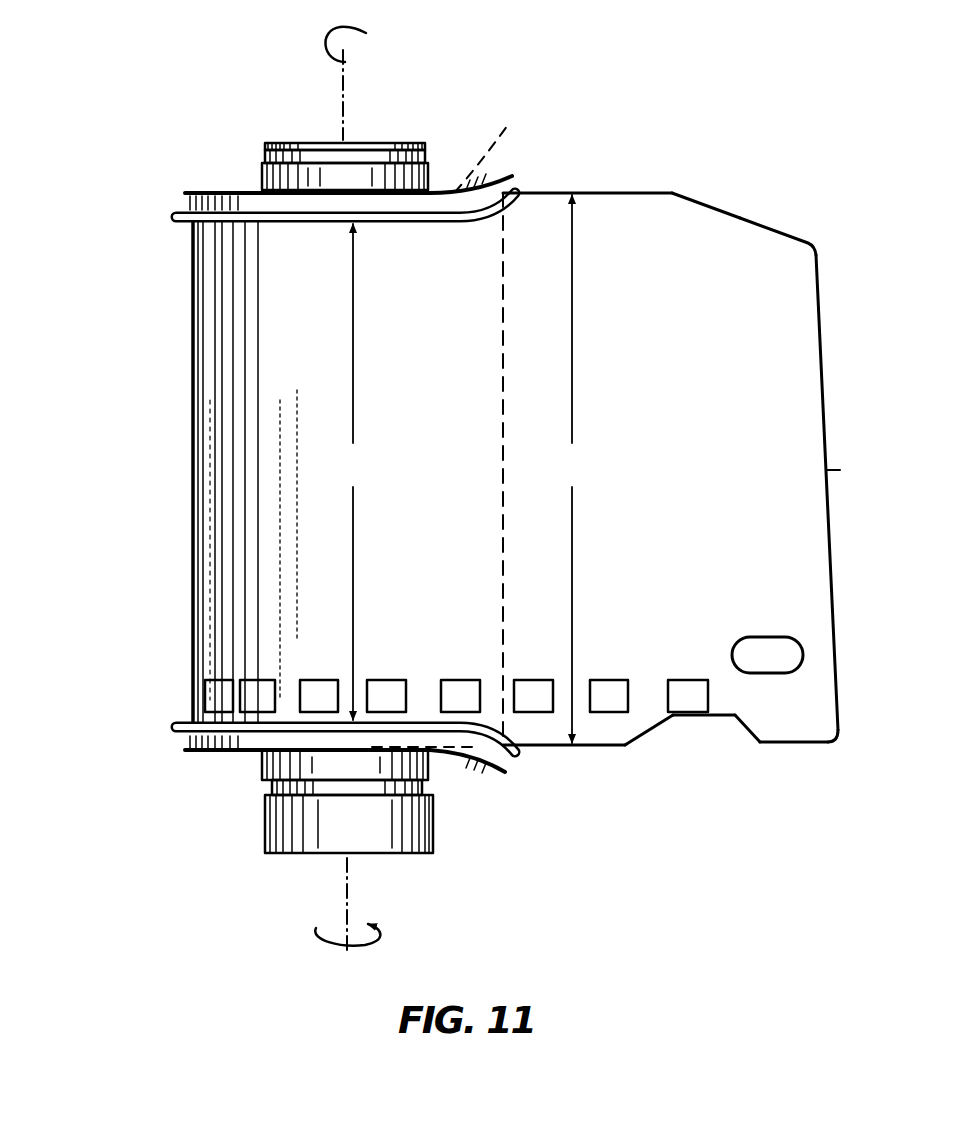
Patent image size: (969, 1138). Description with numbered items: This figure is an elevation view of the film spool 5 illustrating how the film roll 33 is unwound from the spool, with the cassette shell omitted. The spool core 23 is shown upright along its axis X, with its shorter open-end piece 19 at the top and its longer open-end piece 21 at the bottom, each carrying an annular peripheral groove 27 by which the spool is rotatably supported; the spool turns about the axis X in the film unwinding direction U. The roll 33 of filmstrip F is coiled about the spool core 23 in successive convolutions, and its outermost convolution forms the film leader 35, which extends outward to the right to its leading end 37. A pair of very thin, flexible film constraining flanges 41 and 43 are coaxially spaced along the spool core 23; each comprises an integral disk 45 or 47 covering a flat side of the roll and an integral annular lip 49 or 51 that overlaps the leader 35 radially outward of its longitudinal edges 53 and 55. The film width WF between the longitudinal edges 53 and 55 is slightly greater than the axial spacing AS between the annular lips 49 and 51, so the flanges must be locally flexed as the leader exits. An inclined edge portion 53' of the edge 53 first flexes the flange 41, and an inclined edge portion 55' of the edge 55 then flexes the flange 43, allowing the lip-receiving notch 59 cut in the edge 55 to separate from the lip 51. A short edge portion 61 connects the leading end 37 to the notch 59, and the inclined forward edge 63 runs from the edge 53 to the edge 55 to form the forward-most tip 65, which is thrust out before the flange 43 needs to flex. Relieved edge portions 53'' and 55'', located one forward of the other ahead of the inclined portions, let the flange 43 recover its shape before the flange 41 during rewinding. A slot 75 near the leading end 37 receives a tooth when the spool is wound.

The film spool 5 is at (184, 472).
The shorter open-end piece 19 is at (425, 148).
The longer open-end piece 21 is at (270, 828).
The spool core 23 is at (333, 438).
The annular peripheral groove 27 is at (428, 156).
The film roll 33 is at (188, 520).
The film leader 35 is at (193, 415).
The leading end 37 is at (792, 492).
The upper film constraining flange 41 is at (178, 198).
The lower film constraining flange 43 is at (180, 748).
The disk 45 is at (289, 150).
The disk 47 is at (283, 795).
The annular lip 49 is at (182, 212).
The annular lip 51 is at (183, 737).
The longitudinal edge 53 is at (659, 178).
The inclined edge portion 53' is at (706, 164).
The relieved edge portion 53'' is at (765, 196).
The longitudinal edge 55 is at (670, 730).
The inclined edge portion 55' is at (644, 694).
The relieved edge portion 55'' is at (704, 682).
The lip-receiving notch 59 is at (732, 726).
The edge portion 61 is at (810, 750).
The forward edge 63 is at (838, 470).
The forward-most tip 65 is at (832, 720).
The slot 75 is at (766, 646).
The filmstrip F is at (222, 306).
The axis X is at (372, 34).
The film unwinding direction U is at (362, 921).
The axial spacing AS is at (348, 472).
The film width WF is at (566, 469).